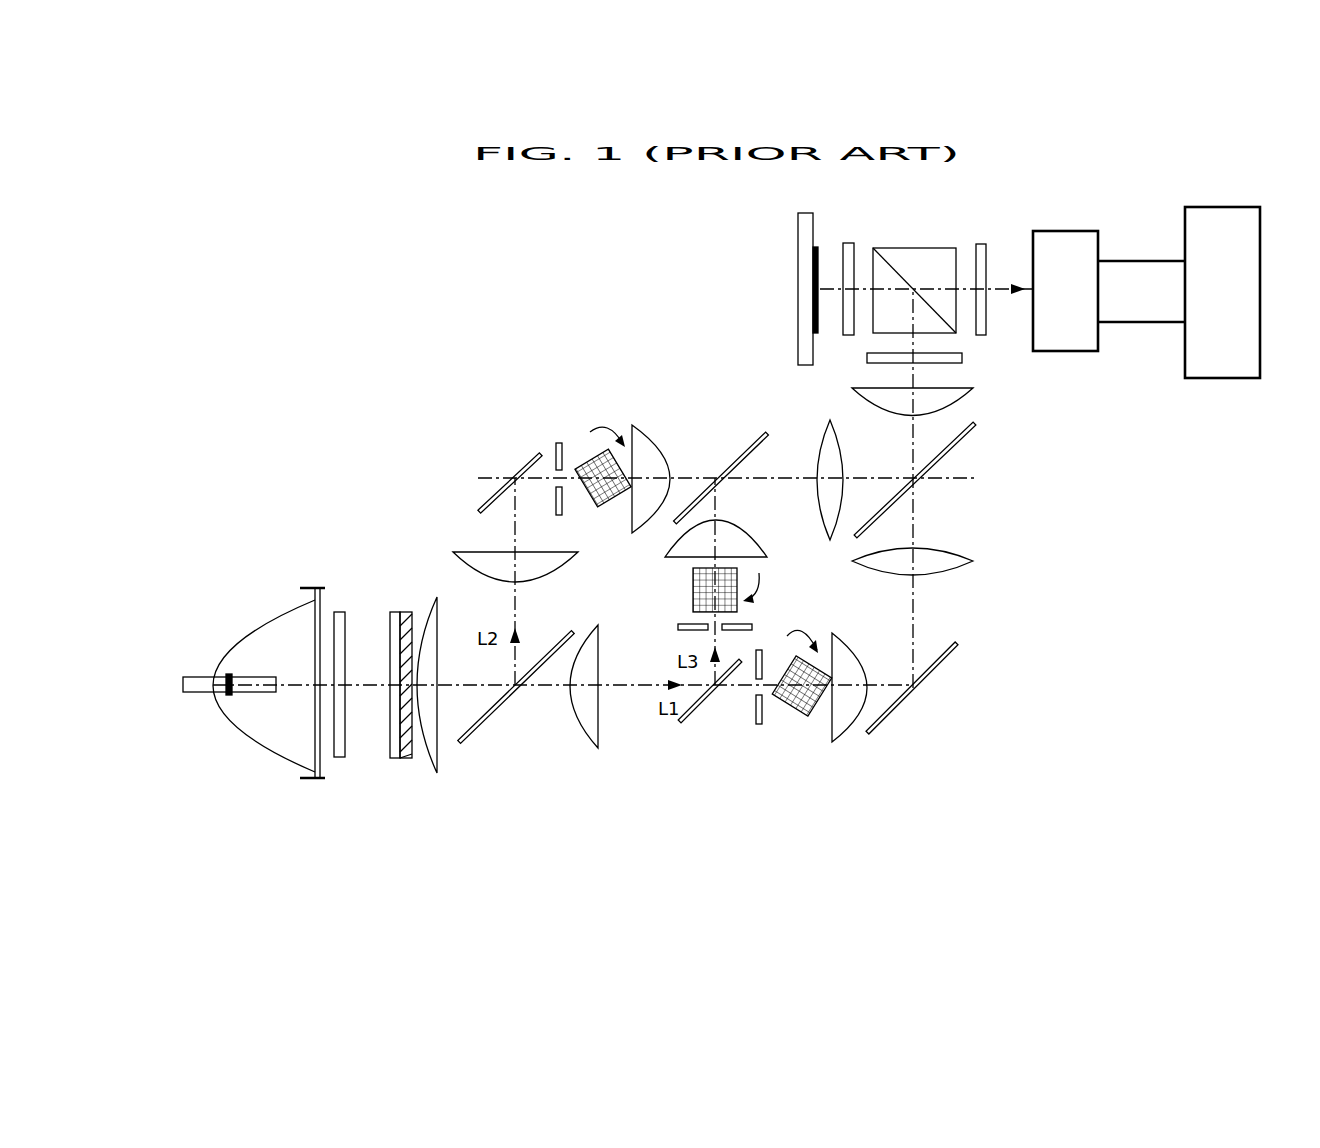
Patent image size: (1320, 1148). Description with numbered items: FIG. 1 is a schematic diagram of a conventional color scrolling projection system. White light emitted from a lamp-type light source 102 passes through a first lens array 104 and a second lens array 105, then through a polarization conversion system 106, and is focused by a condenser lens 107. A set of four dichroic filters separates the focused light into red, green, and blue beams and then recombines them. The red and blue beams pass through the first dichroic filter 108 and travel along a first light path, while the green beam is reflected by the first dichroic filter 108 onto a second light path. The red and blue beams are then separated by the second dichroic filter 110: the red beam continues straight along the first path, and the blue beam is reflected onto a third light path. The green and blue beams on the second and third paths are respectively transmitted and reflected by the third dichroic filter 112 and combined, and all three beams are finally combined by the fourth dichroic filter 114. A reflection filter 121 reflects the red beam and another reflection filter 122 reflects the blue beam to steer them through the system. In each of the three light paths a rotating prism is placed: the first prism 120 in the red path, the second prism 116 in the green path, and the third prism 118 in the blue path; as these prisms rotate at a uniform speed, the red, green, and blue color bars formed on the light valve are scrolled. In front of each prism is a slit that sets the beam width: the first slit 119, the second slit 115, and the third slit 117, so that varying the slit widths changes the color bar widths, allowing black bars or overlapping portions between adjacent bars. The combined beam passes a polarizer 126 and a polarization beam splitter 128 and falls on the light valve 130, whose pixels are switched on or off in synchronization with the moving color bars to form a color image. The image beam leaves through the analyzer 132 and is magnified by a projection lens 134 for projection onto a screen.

The lamp-type light source 102 is at (268, 633).
The first lens array 104 is at (346, 616).
The second lens array 105 is at (392, 757).
The polarization conversion system 106 is at (405, 760).
The lens 107 is at (428, 750).
The first dichroic filter 108 is at (493, 715).
The second dichroic filter 110 is at (705, 700).
The third dichroic filter 112 is at (733, 458).
The fourth dichroic filter 114 is at (935, 465).
The second slit 115 is at (556, 440).
The second prism 116 is at (585, 455).
The third slit 117 is at (678, 628).
The third prism 118 is at (693, 590).
The first slit 119 is at (758, 730).
The first prism 120 is at (800, 715).
The reflection filter 121 is at (890, 718).
The reflection filter 122 is at (490, 498).
The polarizer 126 is at (962, 358).
The polarization beam splitter 128 is at (915, 248).
The light valve 130 is at (798, 289).
The analyzer 132 is at (983, 244).
The projection lens 134 is at (1135, 268).